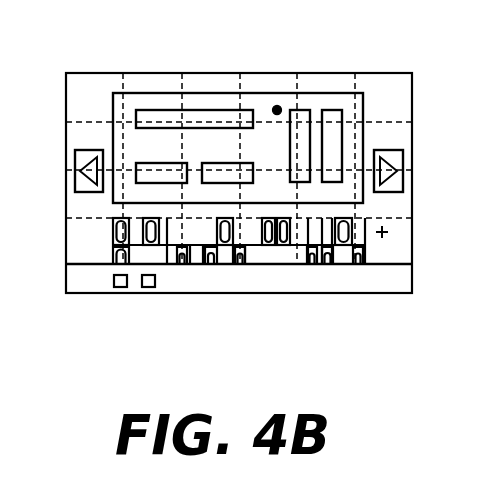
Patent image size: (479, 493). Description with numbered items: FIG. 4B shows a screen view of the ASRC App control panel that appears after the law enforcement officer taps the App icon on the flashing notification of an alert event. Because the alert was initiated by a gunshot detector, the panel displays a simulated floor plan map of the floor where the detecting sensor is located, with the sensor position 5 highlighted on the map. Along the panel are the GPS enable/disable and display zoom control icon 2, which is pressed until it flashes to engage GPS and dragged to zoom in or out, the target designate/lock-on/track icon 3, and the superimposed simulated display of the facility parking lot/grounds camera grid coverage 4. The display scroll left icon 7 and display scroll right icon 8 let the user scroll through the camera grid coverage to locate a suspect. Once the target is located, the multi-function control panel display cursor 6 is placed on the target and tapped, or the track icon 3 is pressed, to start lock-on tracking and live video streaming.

The GPS enable/disable and display zoom control icon 2 is at (120, 288).
The target designate/lock-on/track icon 3 is at (148, 288).
The superimposed simulated display of the facility parking lot/grounds camera grid c 4 is at (269, 264).
The sensor position on the floor plan map 5 is at (277, 96).
The multi-function control panel display cursor 6 is at (382, 252).
The display scroll left icon 7 is at (90, 154).
The display scroll right icon 8 is at (390, 151).